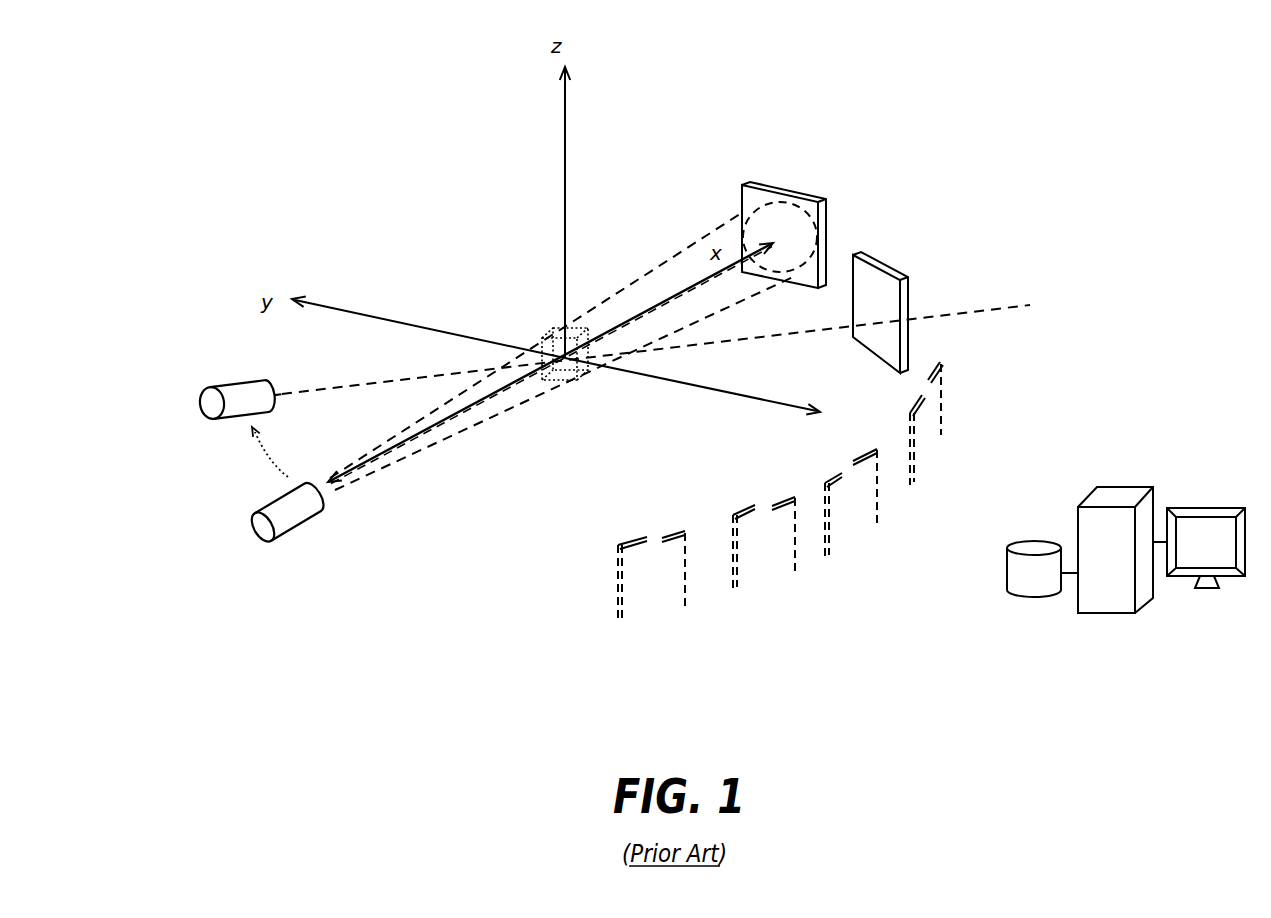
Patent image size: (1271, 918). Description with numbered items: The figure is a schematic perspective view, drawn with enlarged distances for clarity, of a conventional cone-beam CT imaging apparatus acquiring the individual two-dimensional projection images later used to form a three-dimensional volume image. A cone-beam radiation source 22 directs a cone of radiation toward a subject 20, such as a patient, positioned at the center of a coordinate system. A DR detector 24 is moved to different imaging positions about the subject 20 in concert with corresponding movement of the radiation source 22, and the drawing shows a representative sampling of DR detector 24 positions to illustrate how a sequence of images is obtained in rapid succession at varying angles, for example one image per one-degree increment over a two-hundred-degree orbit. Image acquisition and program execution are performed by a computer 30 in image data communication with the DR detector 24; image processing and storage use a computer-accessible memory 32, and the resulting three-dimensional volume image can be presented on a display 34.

The subject 20 is at (583, 375).
The cone-beam radiation source 22 is at (292, 535).
The DR detector 24 is at (795, 195).
The computer 30 is at (1120, 581).
The computer-accessible memory 32 is at (1047, 589).
The display 34 is at (1215, 557).